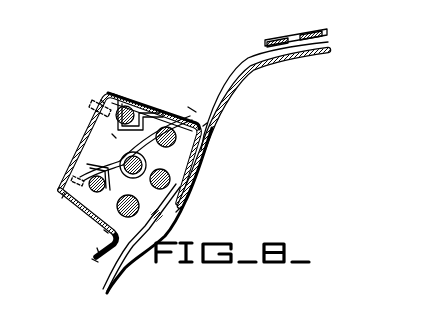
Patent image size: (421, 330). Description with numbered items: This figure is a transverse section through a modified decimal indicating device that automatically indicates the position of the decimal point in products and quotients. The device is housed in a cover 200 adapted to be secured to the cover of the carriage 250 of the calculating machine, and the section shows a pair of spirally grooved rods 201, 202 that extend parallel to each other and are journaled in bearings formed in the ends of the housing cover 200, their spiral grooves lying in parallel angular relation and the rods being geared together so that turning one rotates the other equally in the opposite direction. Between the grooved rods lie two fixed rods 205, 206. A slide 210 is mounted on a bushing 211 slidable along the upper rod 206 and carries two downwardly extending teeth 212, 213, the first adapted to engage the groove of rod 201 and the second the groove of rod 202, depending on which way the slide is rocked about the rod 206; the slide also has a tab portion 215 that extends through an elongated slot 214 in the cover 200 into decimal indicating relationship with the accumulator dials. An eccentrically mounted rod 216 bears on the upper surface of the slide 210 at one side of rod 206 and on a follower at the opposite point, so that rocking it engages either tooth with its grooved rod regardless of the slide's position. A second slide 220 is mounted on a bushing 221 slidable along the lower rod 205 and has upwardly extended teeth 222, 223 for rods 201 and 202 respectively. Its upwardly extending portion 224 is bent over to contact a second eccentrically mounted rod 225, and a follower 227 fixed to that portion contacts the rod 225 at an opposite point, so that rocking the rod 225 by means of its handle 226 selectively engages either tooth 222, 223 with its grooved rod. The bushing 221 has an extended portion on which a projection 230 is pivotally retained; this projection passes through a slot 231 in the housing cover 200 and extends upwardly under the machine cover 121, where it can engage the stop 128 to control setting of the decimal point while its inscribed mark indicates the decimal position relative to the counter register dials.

The cover 121 is at (313, 30).
The stop 128 is at (292, 35).
The cover 200 is at (148, 95).
The spirally grooved rod 201 is at (207, 123).
The spirally grooved rod 202 is at (104, 231).
The rod 205 is at (165, 177).
The rod 206 is at (118, 153).
The slide 210 is at (115, 135).
The bushing 211 is at (120, 164).
The tooth 212 is at (157, 104).
The tooth 213 is at (85, 224).
The elongated slot 214 is at (106, 270).
The tab portion 215 is at (96, 258).
The eccentrically mounted rod 216 is at (62, 199).
The second slide 220 is at (173, 225).
The bushing 221 is at (181, 207).
The tooth 222 is at (183, 143).
The tooth 223 is at (136, 213).
The upwardly extending portion 224 is at (123, 93).
The eccentrically mounted rod 225 is at (95, 112).
The handle 226 is at (102, 98).
The follower 227 is at (140, 97).
The projection 230 is at (249, 58).
The slot 231 is at (188, 107).
The carriage 250 is at (270, 62).